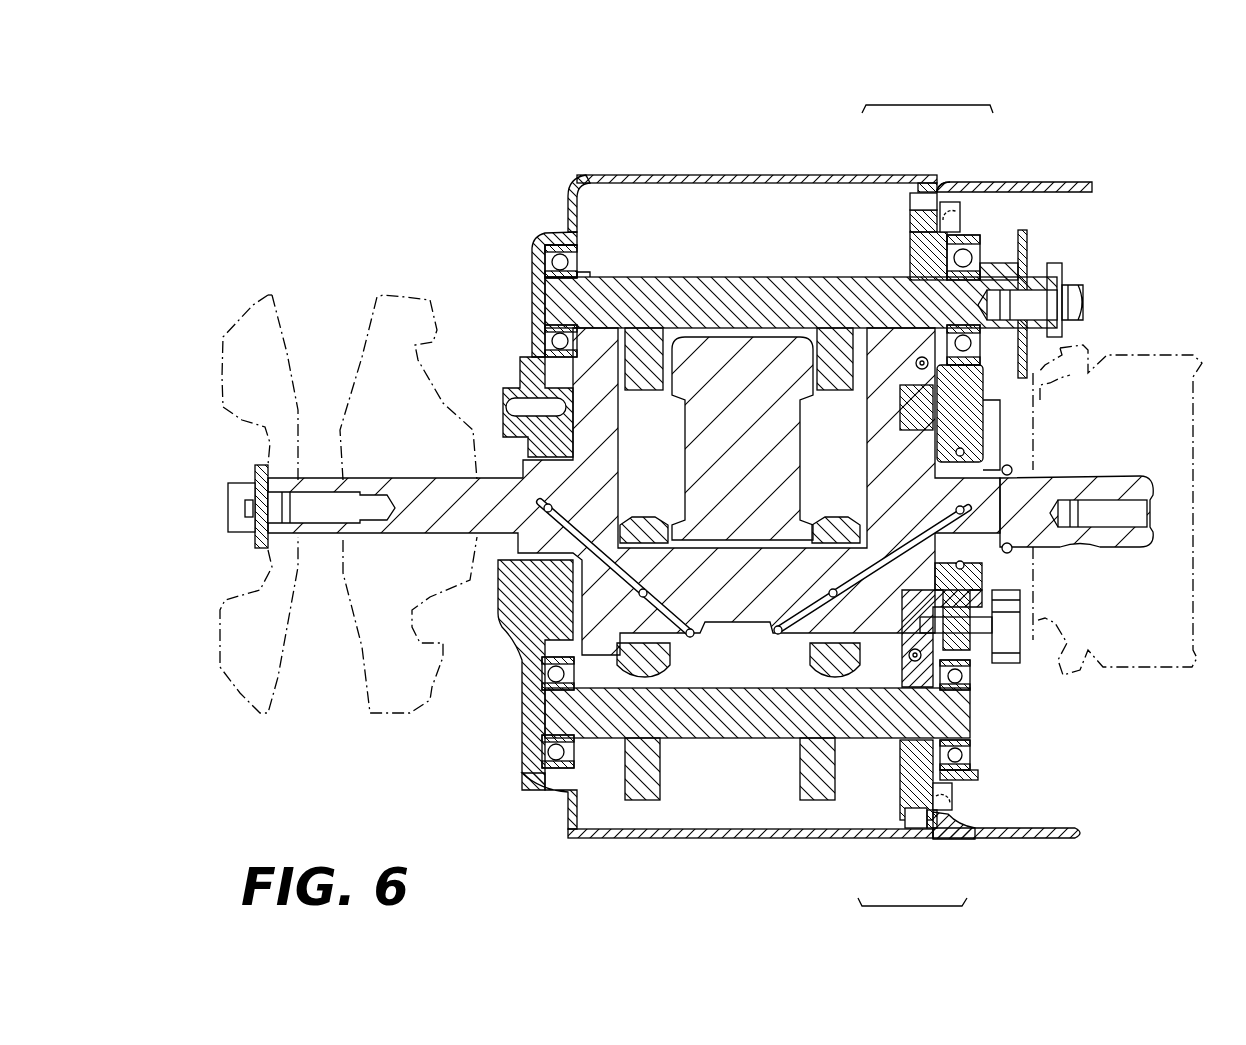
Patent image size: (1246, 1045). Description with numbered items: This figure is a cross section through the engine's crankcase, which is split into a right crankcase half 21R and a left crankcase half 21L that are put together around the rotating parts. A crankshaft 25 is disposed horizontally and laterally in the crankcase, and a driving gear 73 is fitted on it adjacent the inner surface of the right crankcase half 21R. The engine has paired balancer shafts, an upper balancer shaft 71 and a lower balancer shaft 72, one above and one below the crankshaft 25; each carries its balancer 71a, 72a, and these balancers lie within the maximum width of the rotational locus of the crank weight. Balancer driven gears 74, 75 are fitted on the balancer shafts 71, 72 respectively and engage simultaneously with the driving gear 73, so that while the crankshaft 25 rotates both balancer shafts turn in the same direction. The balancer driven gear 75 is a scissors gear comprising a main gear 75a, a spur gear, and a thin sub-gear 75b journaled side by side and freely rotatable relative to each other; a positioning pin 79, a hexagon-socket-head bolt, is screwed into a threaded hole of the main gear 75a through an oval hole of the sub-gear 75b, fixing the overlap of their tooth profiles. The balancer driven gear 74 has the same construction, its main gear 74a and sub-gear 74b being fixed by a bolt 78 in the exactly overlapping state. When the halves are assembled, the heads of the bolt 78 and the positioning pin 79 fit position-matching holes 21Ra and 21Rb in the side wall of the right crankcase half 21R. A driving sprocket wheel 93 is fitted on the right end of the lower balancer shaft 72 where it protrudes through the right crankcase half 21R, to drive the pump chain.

The left crankcase half 21L is at (613, 840).
The right crankcase half 21R is at (1006, 841).
The position-matching hole 21Ra is at (962, 792).
The position-matching hole 21Rb is at (962, 226).
The crankshaft 25 is at (492, 534).
The upper balancer shaft 71 is at (748, 740).
The balancer 71a is at (643, 800).
The lower balancer shaft 72 is at (718, 285).
The balancer 72a is at (647, 390).
The driving gear 73 is at (980, 430).
The balancer driven gear 74 is at (913, 908).
The main gear 74a is at (903, 841).
The sub-gear 74b is at (937, 841).
The balancer driven gear 75 is at (928, 103).
The main gear 75a is at (918, 192).
The sub-gear 75b is at (940, 188).
The bolt 78 is at (963, 798).
The positioning pin 79 is at (962, 213).
The driving sprocket wheel 93 is at (1058, 268).